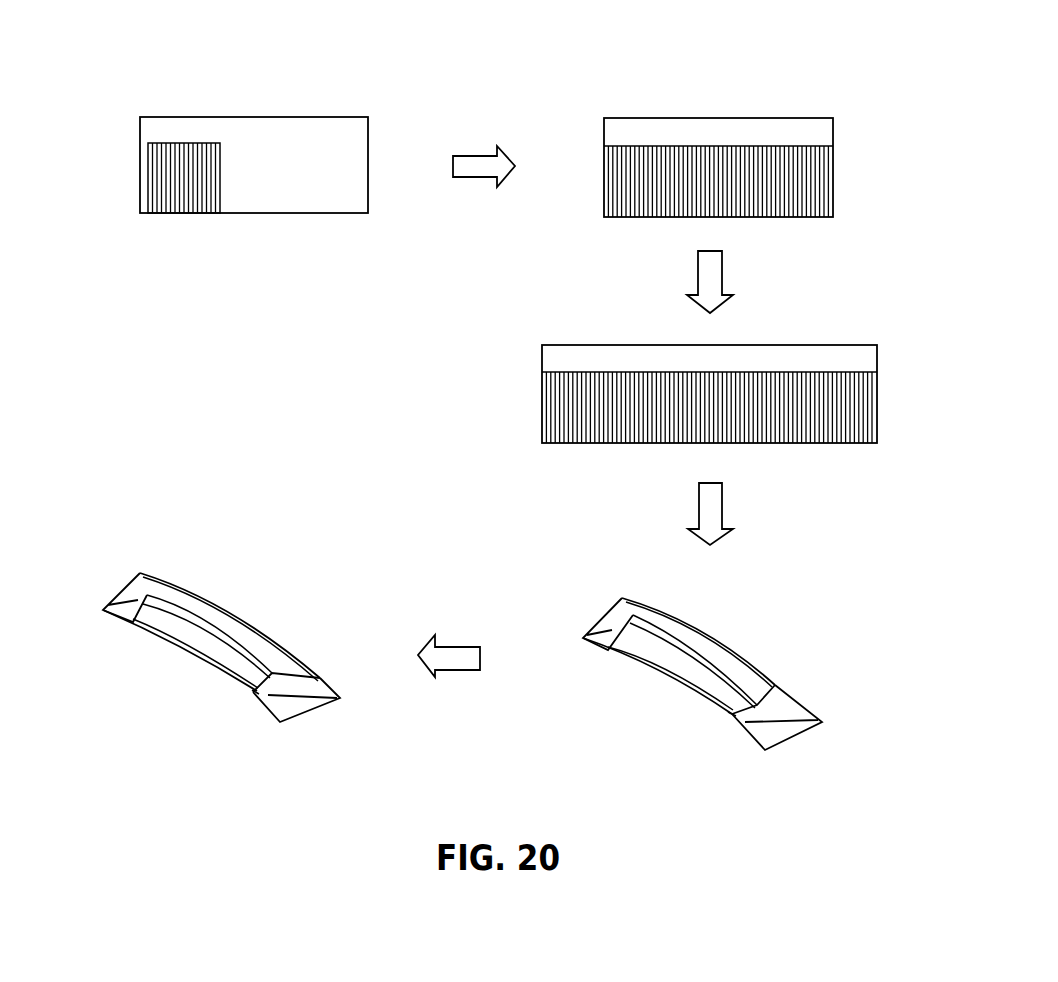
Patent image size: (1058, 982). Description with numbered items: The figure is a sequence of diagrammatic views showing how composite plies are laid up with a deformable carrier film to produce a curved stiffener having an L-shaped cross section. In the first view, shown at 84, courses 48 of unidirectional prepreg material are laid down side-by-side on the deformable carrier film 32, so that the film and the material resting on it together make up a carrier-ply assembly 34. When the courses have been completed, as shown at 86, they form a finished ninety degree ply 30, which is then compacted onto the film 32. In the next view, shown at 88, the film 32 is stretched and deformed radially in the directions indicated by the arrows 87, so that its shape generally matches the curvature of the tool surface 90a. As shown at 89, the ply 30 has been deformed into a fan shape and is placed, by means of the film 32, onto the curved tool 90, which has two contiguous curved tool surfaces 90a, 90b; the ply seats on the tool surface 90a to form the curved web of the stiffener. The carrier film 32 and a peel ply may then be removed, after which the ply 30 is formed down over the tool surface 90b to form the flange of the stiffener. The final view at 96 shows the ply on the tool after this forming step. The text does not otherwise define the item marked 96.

The laying down step 84 is at (223, 117).
The courses 48 is at (170, 177).
The carrier film 32 is at (340, 155).
The carrier-ply assembly 34 is at (699, 111).
The completed ply step 86 is at (822, 98).
The ply 30 is at (790, 180).
The stretching step 88 is at (865, 323).
The arrows 87 is at (533, 422).
The placing step 89 is at (598, 606).
The curved tool 90 is at (803, 727).
The tool surface 90a is at (775, 705).
The tool surface 90b is at (736, 724).
The finished curved film 96 is at (138, 661).